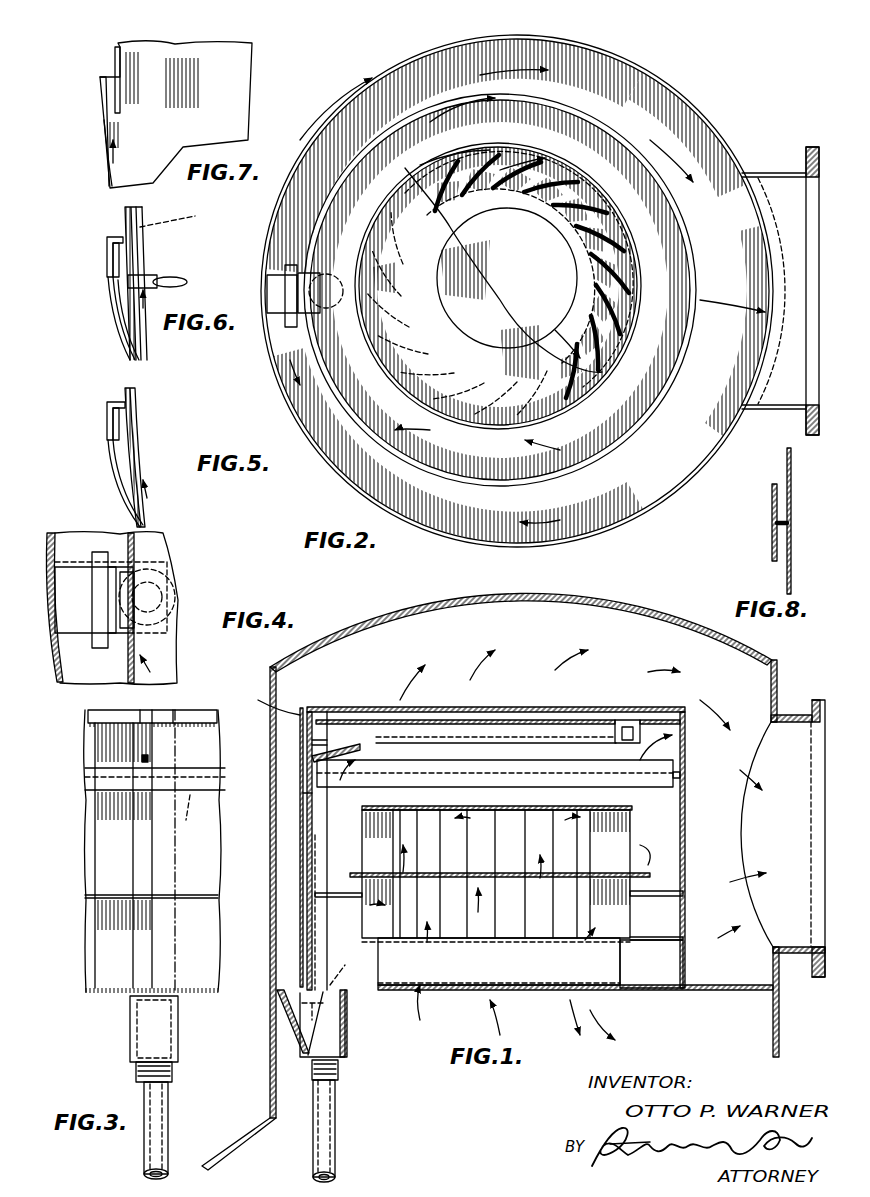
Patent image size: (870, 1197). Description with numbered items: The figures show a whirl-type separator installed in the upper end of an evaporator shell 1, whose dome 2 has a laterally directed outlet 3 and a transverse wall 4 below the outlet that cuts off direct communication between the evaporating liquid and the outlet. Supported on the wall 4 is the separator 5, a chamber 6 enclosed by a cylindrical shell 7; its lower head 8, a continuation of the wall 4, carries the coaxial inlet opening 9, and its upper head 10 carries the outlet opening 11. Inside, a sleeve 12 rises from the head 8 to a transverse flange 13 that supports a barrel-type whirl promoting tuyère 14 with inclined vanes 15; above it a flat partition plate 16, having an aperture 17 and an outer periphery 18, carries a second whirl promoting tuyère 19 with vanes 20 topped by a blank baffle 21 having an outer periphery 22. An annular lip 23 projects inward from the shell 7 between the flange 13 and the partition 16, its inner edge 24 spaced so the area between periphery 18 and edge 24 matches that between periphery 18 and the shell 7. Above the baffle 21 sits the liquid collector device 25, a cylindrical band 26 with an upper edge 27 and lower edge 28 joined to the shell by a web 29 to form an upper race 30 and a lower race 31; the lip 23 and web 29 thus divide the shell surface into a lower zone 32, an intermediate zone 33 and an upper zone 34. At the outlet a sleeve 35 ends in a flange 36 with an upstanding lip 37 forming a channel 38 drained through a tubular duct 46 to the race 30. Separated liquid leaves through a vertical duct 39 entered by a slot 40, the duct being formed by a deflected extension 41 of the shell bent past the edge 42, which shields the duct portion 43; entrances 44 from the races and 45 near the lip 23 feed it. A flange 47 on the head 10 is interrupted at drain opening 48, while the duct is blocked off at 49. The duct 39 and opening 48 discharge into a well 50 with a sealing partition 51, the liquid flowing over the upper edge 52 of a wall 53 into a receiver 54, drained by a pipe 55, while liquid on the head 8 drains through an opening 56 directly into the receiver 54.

In FIG. 1, the evaporator shell 1 is at (248, 1138).
In FIG. 4, the dome 2 is at (52, 533).
In FIG. 2, the dome 2 is at (628, 60).
In FIG. 1, the dome 2 is at (376, 612).
In FIG. 2, the outlet 3 is at (790, 170).
In FIG. 1, the outlet 3 is at (800, 710).
In FIG. 4, the wall 4 is at (60, 688).
In FIG. 3, the wall 4 is at (200, 996).
In FIG. 2, the wall 4 is at (698, 114).
In FIG. 1, the wall 4 is at (745, 992).
In FIG. 2, the separator 5 is at (612, 140).
In FIG. 1, the separator 5 is at (605, 690).
In FIG. 3, the chamber 6 is at (197, 843).
In FIG. 2, the chamber 6 is at (662, 196).
In FIG. 1, the chamber 6 is at (335, 750).
In FIG. 6, the cylindrical wall or shell 7 is at (124, 214).
In FIG. 5, the cylindrical wall or shell 7 is at (124, 396).
In FIG. 4, the cylindrical wall or shell 7 is at (128, 540).
In FIG. 3, the cylindrical wall or shell 7 is at (88, 875).
In FIG. 8, the cylindrical wall or shell 7 is at (792, 465).
In FIG. 2, the cylindrical wall or shell 7 is at (318, 206).
In FIG. 1, the cylindrical wall or shell 7 is at (380, 693).
In FIG. 4, the head 8 is at (182, 545).
In FIG. 3, the head 8 is at (95, 988).
In FIG. 2, the head 8 is at (545, 108).
In FIG. 1, the head 8 is at (652, 988).
In FIG. 2, the inlet opening 9 is at (556, 238).
In FIG. 1, the inlet opening 9 is at (538, 990).
In FIG. 7, the head 10 is at (253, 47).
In FIG. 3, the head 10 is at (204, 710).
In FIG. 1, the head 10 is at (647, 706).
In FIG. 7, the outlet opening 11 is at (250, 96).
In FIG. 1, the outlet opening 11 is at (500, 718).
In FIG. 1, the sleeve 12 is at (618, 968).
In FIG. 2, the transverse flange 13 is at (628, 246).
In FIG. 1, the transverse flange 13 is at (636, 943).
In FIG. 1, the whirl promoting tuyère 14 is at (500, 874).
In FIG. 1, the vanes 15 is at (372, 905).
In FIG. 2, the partition plate 16 is at (578, 182).
In FIG. 1, the partition plate 16 is at (606, 876).
In FIG. 2, the aperture 17 is at (492, 218).
In FIG. 1, the aperture 17 is at (560, 872).
In FIG. 2, the outer periphery 18 is at (540, 150).
In FIG. 1, the outer periphery 18 is at (650, 851).
In FIG. 2, the second whirl promoting tuyère 19 is at (520, 288).
In FIG. 1, the second whirl promoting tuyère 19 is at (511, 851).
In FIG. 2, the vanes 20 is at (430, 170).
In FIG. 1, the vanes 20 is at (368, 815).
In FIG. 2, the baffle 21 is at (507, 313).
In FIG. 1, the baffle 21 is at (548, 805).
In FIG. 2, the outer periphery 22 is at (362, 225).
In FIG. 1, the outer periphery 22 is at (636, 804).
In FIG. 5, the flange or lip 23 is at (145, 510).
In FIG. 3, the flange or lip 23 is at (196, 900).
In FIG. 2, the flange or lip 23 is at (658, 388).
In FIG. 1, the flange or lip 23 is at (686, 915).
In FIG. 5, the inner edge 24 is at (140, 480).
In FIG. 2, the inner edge 24 is at (674, 348).
In FIG. 1, the inner edge 24 is at (686, 884).
In FIG. 3, the liquid collector device 25 is at (218, 787).
In FIG. 8, the liquid collector device 25 is at (772, 541).
In FIG. 2, the liquid collector device 25 is at (410, 462).
In FIG. 1, the liquid collector device 25 is at (686, 796).
In FIG. 6, the cylindrical panel or band 26 is at (145, 242).
In FIG. 3, the cylindrical panel or band 26 is at (85, 788).
In FIG. 8, the cylindrical panel or band 26 is at (772, 508).
In FIG. 2, the cylindrical panel or band 26 is at (450, 472).
In FIG. 1, the cylindrical panel or band 26 is at (673, 762).
In FIG. 6, the upper edge 27 is at (141, 346).
In FIG. 3, the upper edge 27 is at (95, 752).
In FIG. 8, the upper edge 27 is at (772, 488).
In FIG. 3, the lower edge 28 is at (92, 793).
In FIG. 8, the lower edge 28 is at (775, 562).
In FIG. 6, the annular flange or web 29 is at (127, 333).
In FIG. 3, the annular flange or web 29 is at (85, 770).
In FIG. 8, the annular flange or web 29 is at (788, 526).
In FIG. 2, the annular flange or web 29 is at (488, 472).
In FIG. 1, the annular flange or web 29 is at (686, 775).
In FIG. 6, the upper race 30 is at (143, 214).
In FIG. 3, the upper race 30 is at (188, 780).
In FIG. 8, the upper race 30 is at (791, 493).
In FIG. 2, the upper race 30 is at (345, 172).
In FIG. 1, the upper race 30 is at (686, 765).
In FIG. 6, the lower race 31 is at (175, 218).
In FIG. 3, the lower race 31 is at (195, 807).
In FIG. 8, the lower race 31 is at (791, 556).
In FIG. 1, the lower race 31 is at (681, 778).
In FIG. 3, the lower zone 32 is at (205, 945).
In FIG. 1, the lower zone 32 is at (686, 962).
In FIG. 3, the intermediate zone 33 is at (215, 855).
In FIG. 8, the intermediate zone 33 is at (788, 580).
In FIG. 2, the intermediate zone 33 is at (688, 280).
In FIG. 1, the intermediate zone 33 is at (688, 832).
In FIG. 3, the upper zone 34 is at (220, 745).
In FIG. 8, the upper zone 34 is at (786, 455).
In FIG. 2, the upper zone 34 is at (372, 150).
In FIG. 1, the upper zone 34 is at (686, 745).
In FIG. 1, the sleeve 35 is at (590, 760).
In FIG. 1, the transverse flange 36 is at (616, 752).
In FIG. 1, the lip 37 is at (640, 725).
In FIG. 1, the channel 38 is at (626, 718).
In FIG. 6, the duct 39 is at (110, 288).
In FIG. 5, the duct 39 is at (110, 440).
In FIG. 4, the duct 39 is at (110, 633).
In FIG. 3, the duct 39 is at (150, 856).
In FIG. 2, the duct 39 is at (284, 320).
In FIG. 1, the duct 39 is at (300, 815).
In FIG. 6, the slot 40 is at (116, 302).
In FIG. 5, the slot 40 is at (116, 475).
In FIG. 4, the slot 40 is at (136, 648).
In FIG. 3, the slot 40 is at (135, 832).
In FIG. 2, the slot 40 is at (315, 320).
In FIG. 1, the slot 40 is at (315, 843).
In FIG. 6, the deflected extension 41 is at (133, 352).
In FIG. 5, the deflected extension 41 is at (128, 505).
In FIG. 4, the deflected extension 41 is at (128, 660).
In FIG. 3, the deflected extension 41 is at (96, 825).
In FIG. 2, the deflected extension 41 is at (292, 335).
In FIG. 1, the deflected extension 41 is at (300, 895).
In FIG. 6, the edge 42 is at (130, 265).
In FIG. 5, the edge 42 is at (122, 436).
In FIG. 4, the edge 42 is at (136, 597).
In FIG. 3, the edge 42 is at (150, 940).
In FIG. 2, the edge 42 is at (318, 272).
In FIG. 1, the edge 42 is at (318, 938).
In FIG. 6, the duct portion 43 is at (107, 246).
In FIG. 5, the duct portion 43 is at (107, 412).
In FIG. 4, the duct portion 43 is at (108, 580).
In FIG. 3, the duct portion 43 is at (162, 858).
In FIG. 2, the duct portion 43 is at (288, 270).
In FIG. 1, the duct portion 43 is at (307, 848).
In FIG. 6, the entrance 44 is at (120, 318).
In FIG. 3, the entrance 44 is at (123, 806).
In FIG. 2, the entrance 44 is at (292, 345).
In FIG. 1, the entrance 44 is at (310, 780).
In FIG. 5, the entrance 45 is at (118, 456).
In FIG. 3, the entrance 45 is at (148, 908).
In FIG. 1, the entrance 45 is at (312, 915).
In FIG. 6, the tubular duct 46 is at (186, 278).
In FIG. 3, the tubular duct 46 is at (148, 757).
In FIG. 1, the tubular duct 46 is at (350, 742).
In FIG. 7, the flange 47 is at (115, 48).
In FIG. 3, the flange 47 is at (182, 710).
In FIG. 1, the flange 47 is at (683, 712).
In FIG. 7, the drain opening 48 is at (118, 120).
In FIG. 3, the drain opening 48 is at (140, 712).
In FIG. 1, the drain opening 48 is at (309, 706).
In FIG. 7, the block 49 is at (104, 101).
In FIG. 3, the block 49 is at (128, 710).
In FIG. 1, the block 49 is at (271, 702).
In FIG. 4, the well 50 is at (73, 567).
In FIG. 2, the well 50 is at (268, 285).
In FIG. 1, the well 50 is at (290, 1035).
In FIG. 4, the sealing partition 51 is at (92, 606).
In FIG. 2, the sealing partition 51 is at (291, 296).
In FIG. 1, the sealing partition 51 is at (290, 1008).
In FIG. 4, the upper edge 52 is at (160, 623).
In FIG. 1, the upper edge 52 is at (319, 1015).
In FIG. 1, the wall 53 is at (327, 1045).
In FIG. 4, the receiver 54 is at (172, 567).
In FIG. 3, the receiver 54 is at (130, 1036).
In FIG. 1, the receiver 54 is at (348, 1036).
In FIG. 4, the pipe 55 is at (176, 578).
In FIG. 3, the pipe 55 is at (168, 1133).
In FIG. 1, the pipe 55 is at (313, 1152).
In FIG. 4, the opening 56 is at (140, 560).
In FIG. 3, the opening 56 is at (168, 988).
In FIG. 2, the opening 56 is at (334, 282).
In FIG. 1, the opening 56 is at (341, 971).